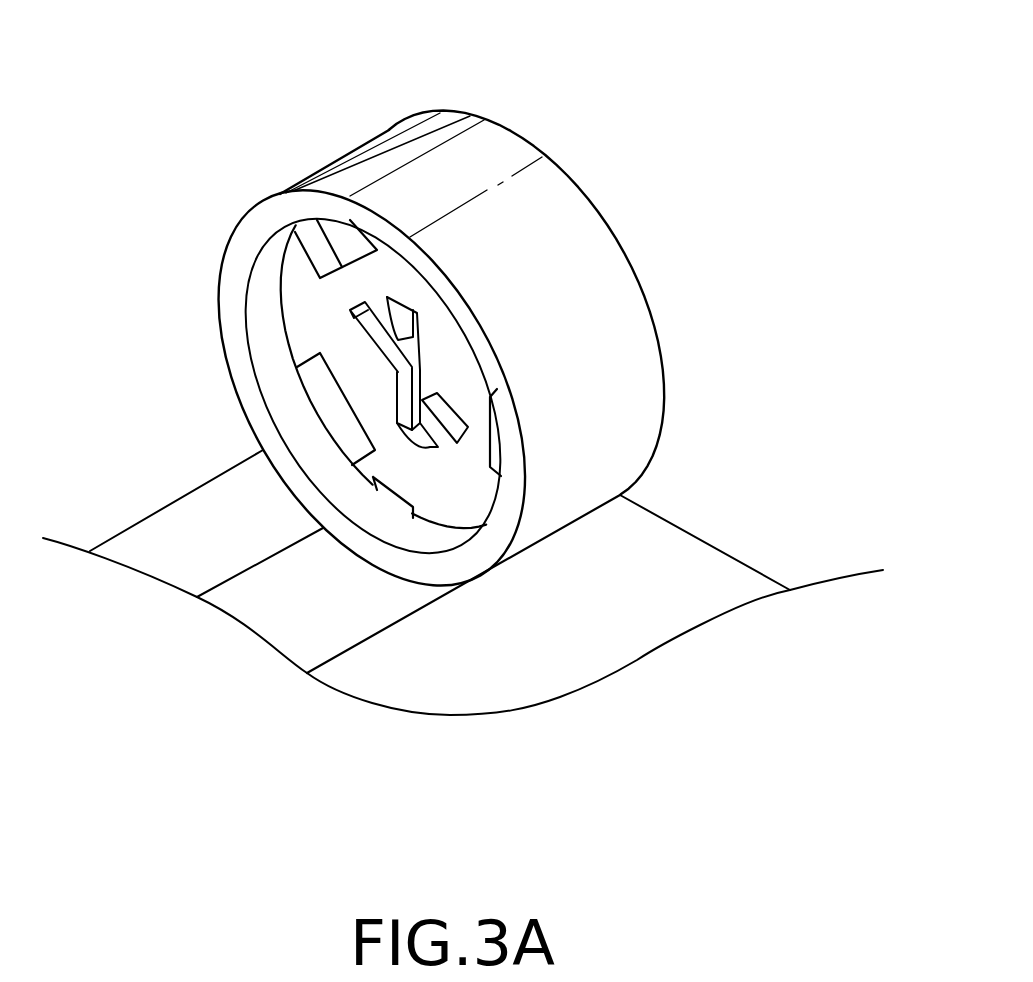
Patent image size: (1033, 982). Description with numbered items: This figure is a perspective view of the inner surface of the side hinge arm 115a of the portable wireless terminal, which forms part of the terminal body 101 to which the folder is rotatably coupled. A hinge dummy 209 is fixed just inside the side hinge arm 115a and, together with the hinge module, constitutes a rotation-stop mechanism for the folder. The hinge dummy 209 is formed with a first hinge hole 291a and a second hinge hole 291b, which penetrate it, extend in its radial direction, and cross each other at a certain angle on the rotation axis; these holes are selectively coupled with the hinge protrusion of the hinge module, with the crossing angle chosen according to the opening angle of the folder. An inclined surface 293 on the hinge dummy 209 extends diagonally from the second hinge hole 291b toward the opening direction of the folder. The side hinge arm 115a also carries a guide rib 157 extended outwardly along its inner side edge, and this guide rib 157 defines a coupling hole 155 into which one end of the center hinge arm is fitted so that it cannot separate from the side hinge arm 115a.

The terminal body 101 is at (700, 563).
The side hinge arm 115a is at (505, 148).
The coupling hole 155 is at (260, 278).
The guide rib 157 is at (372, 226).
The hinge dummy 209 is at (470, 488).
The first hinge hole 291a is at (366, 330).
The second hinge hole 291b is at (420, 340).
The inclined surface 293 is at (378, 332).